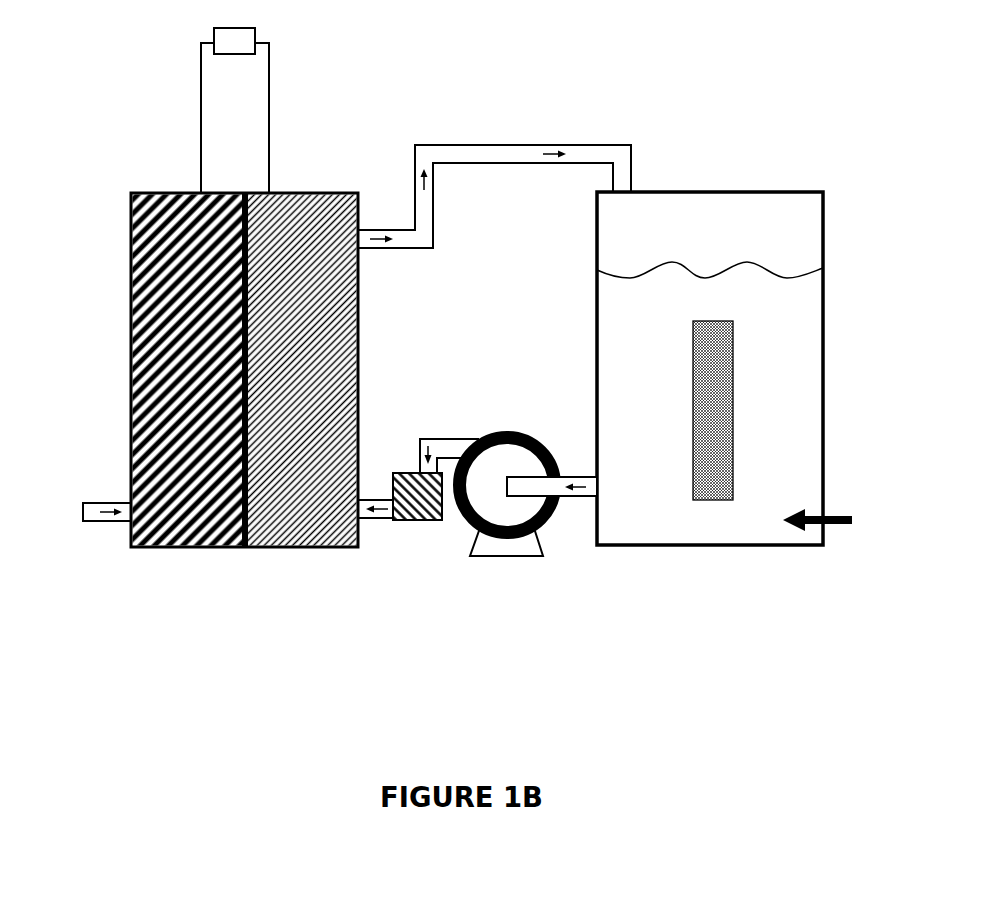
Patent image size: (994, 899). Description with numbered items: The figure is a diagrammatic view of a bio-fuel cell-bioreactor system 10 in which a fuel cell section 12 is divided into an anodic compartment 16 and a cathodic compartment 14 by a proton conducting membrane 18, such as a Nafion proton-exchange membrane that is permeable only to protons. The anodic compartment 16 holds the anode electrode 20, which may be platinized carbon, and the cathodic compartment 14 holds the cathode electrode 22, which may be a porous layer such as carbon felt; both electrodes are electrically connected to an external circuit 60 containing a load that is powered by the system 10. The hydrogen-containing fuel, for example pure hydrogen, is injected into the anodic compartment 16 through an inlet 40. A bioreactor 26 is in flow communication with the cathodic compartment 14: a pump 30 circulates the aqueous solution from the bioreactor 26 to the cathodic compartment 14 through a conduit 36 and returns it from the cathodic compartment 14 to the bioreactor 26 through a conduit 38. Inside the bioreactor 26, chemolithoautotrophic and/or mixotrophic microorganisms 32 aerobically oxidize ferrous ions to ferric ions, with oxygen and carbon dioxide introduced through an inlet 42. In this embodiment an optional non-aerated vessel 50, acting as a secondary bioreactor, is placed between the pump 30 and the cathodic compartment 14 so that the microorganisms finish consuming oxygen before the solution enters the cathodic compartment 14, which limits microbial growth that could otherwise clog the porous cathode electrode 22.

The bio-fuel cell-bioreactor system 10 is at (748, 117).
The fuel cell section 12 is at (358, 633).
The cathodic compartment 14 is at (358, 568).
The anodic compartment 16 is at (239, 568).
The proton conducting membrane 18 is at (245, 193).
The anode electrode 20 is at (200, 210).
The cathode electrode 22 is at (287, 193).
The bioreactor 26 is at (823, 627).
The pump 30 is at (519, 432).
The microorganisms 32 is at (733, 400).
The conduit 36 is at (436, 437).
The conduit 38 is at (488, 154).
The inlet 40 is at (78, 505).
The inlet 42 is at (843, 513).
The non-aerated vessel 50 is at (419, 522).
The external circuit 60 is at (237, 43).